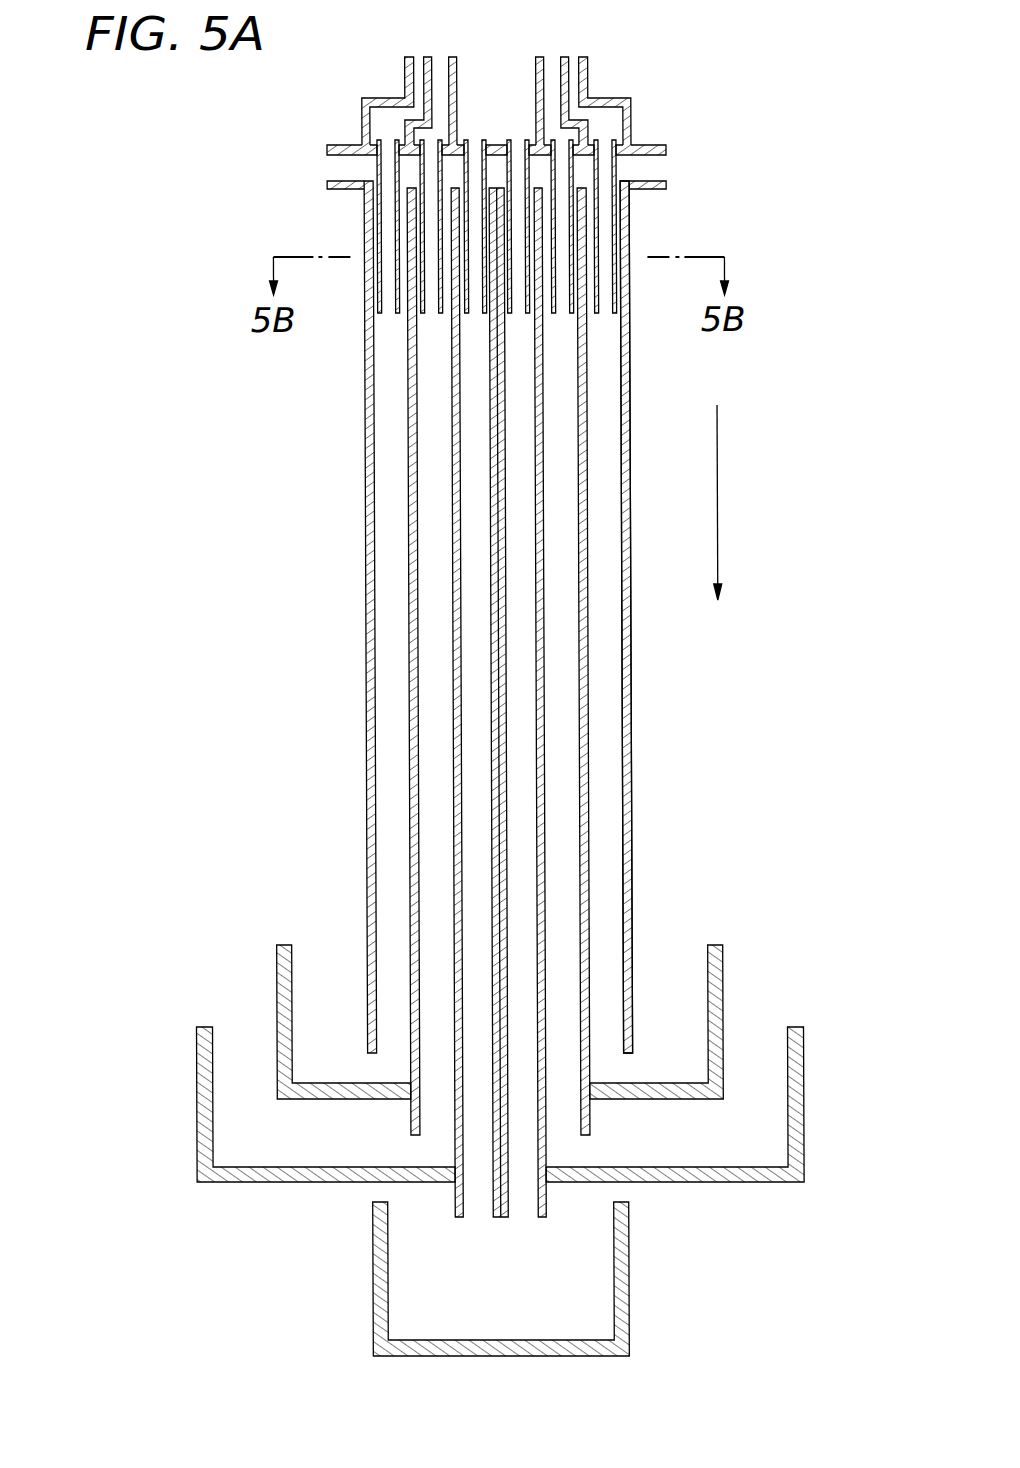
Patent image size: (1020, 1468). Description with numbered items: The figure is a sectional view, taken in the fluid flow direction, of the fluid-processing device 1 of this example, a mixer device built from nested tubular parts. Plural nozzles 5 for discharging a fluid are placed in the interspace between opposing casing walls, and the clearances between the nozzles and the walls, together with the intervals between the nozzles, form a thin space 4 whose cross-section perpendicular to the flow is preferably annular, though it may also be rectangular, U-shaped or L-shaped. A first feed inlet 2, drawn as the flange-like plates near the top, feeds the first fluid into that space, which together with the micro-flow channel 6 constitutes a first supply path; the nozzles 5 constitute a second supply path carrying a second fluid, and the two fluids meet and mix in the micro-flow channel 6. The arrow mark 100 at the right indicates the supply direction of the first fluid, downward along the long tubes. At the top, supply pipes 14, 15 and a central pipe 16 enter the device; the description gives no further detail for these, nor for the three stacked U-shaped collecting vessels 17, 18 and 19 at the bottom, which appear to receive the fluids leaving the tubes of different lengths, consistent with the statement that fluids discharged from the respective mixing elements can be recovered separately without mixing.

The fluid-processing device 1 is at (296, 458).
The first feed inlet 2 is at (335, 167).
The thin space 4 is at (628, 277).
The nozzles 5 is at (614, 233).
The micro-flow channel 6 is at (620, 752).
The supply pipe 14 is at (418, 58).
The supply pipe 15 is at (440, 60).
The center supply pipe 16 is at (493, 73).
The inner vessel 17 is at (274, 975).
The middle vessel 18 is at (193, 1092).
The bottom vessel 19 is at (624, 1277).
The arrow mark 100 is at (718, 508).